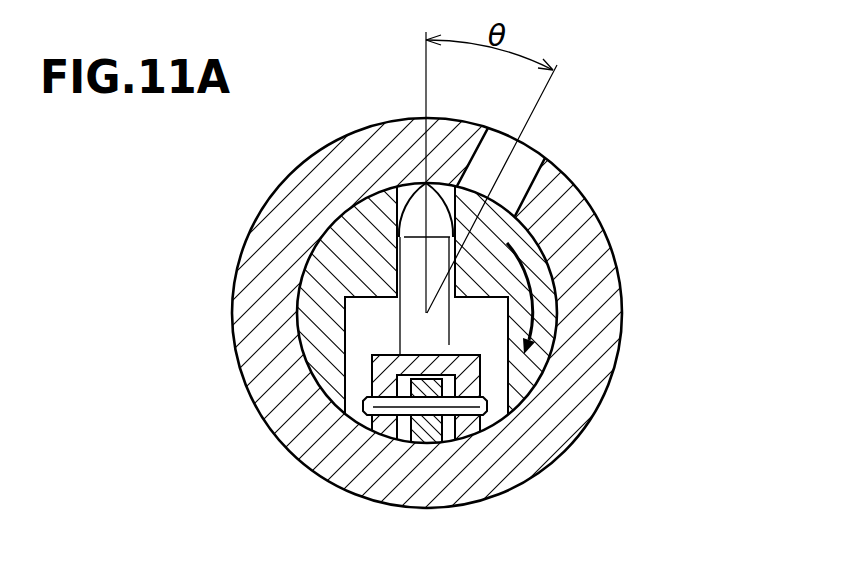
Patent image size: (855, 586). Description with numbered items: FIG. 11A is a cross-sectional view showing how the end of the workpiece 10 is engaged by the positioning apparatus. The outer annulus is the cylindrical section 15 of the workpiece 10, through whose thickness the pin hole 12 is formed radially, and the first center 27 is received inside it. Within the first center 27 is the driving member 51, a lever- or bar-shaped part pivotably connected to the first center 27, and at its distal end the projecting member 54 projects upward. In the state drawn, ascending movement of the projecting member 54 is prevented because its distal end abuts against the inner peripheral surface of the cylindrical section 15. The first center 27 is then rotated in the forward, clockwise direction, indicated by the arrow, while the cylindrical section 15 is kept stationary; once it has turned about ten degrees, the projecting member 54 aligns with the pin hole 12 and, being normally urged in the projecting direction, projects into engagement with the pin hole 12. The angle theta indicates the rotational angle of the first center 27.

The workpiece 10 is at (638, 297).
The pin hole 12 is at (532, 180).
The cylindrical section 15 is at (612, 356).
The first center 27 is at (317, 336).
The driving member 51 is at (425, 437).
The projecting member 54 is at (418, 202).